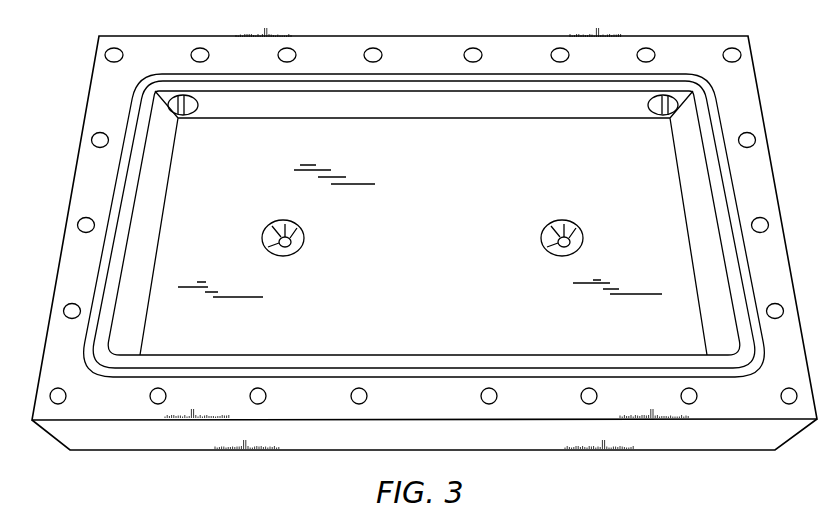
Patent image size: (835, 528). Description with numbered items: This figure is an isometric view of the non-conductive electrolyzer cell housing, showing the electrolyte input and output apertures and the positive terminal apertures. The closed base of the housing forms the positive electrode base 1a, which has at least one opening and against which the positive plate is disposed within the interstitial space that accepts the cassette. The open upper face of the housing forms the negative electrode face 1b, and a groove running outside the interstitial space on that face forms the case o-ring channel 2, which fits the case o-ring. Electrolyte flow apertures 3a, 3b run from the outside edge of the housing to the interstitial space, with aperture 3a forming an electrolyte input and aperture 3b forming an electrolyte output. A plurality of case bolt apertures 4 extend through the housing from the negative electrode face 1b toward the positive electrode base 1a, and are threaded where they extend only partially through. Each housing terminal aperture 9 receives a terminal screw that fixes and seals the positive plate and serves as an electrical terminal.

The positive electrode base 1a is at (653, 193).
The negative electrode face 1b is at (760, 207).
The case o-ring channel 2 is at (113, 190).
The electrolyte flow aperture (electrolyte input) 3a is at (190, 110).
The electrolyte flow aperture (electrolyte output) 3b is at (656, 112).
The case bolt apertures 4 is at (260, 394).
The housing terminal aperture 9 is at (300, 227).